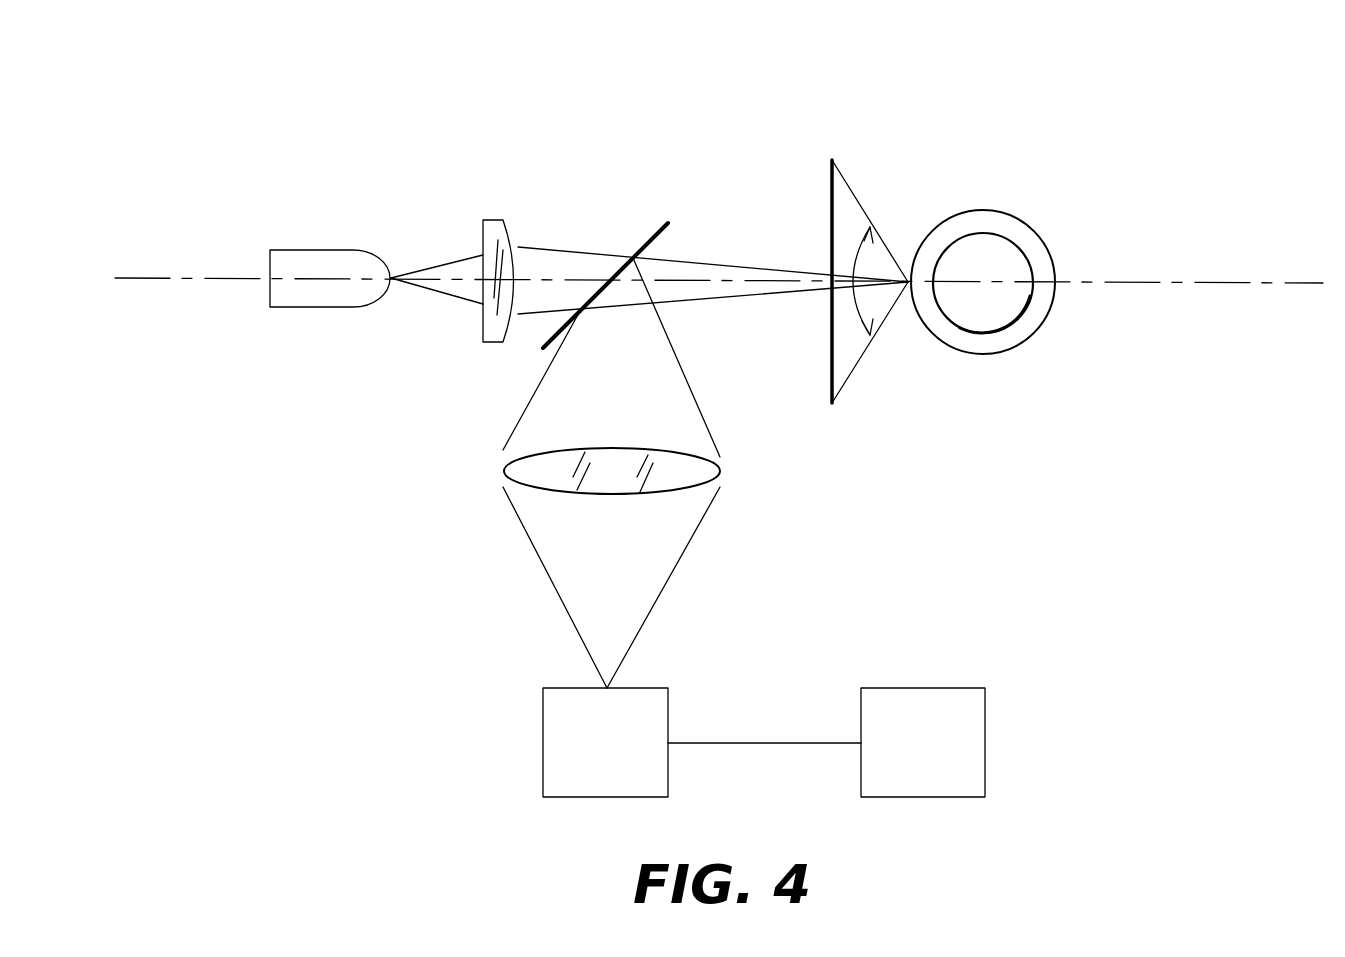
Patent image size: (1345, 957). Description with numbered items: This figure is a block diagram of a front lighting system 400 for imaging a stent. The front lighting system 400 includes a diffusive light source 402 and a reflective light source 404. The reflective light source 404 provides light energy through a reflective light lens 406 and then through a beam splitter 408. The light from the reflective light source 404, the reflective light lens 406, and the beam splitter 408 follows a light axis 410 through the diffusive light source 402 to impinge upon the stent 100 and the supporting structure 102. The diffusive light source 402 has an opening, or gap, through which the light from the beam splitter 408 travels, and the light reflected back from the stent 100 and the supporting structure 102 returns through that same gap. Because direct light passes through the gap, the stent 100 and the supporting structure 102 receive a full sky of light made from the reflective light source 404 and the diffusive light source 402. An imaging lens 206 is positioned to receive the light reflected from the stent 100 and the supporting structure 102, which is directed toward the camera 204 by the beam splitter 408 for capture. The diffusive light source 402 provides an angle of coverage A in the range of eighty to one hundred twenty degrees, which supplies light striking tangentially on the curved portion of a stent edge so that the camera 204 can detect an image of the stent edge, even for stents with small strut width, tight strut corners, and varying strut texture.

The front lighting system 400 is at (1090, 88).
The reflective light source 404 is at (330, 250).
The reflective light lens 406 is at (492, 220).
The beam splitter 408 is at (660, 213).
The diffusive light source 402 is at (830, 175).
The angle of coverage A is at (858, 246).
The stent 100 is at (1042, 333).
The supporting structure 102 is at (1005, 233).
The light axis 410 is at (1183, 283).
The imaging lens 206 is at (503, 470).
The camera 204 is at (653, 688).